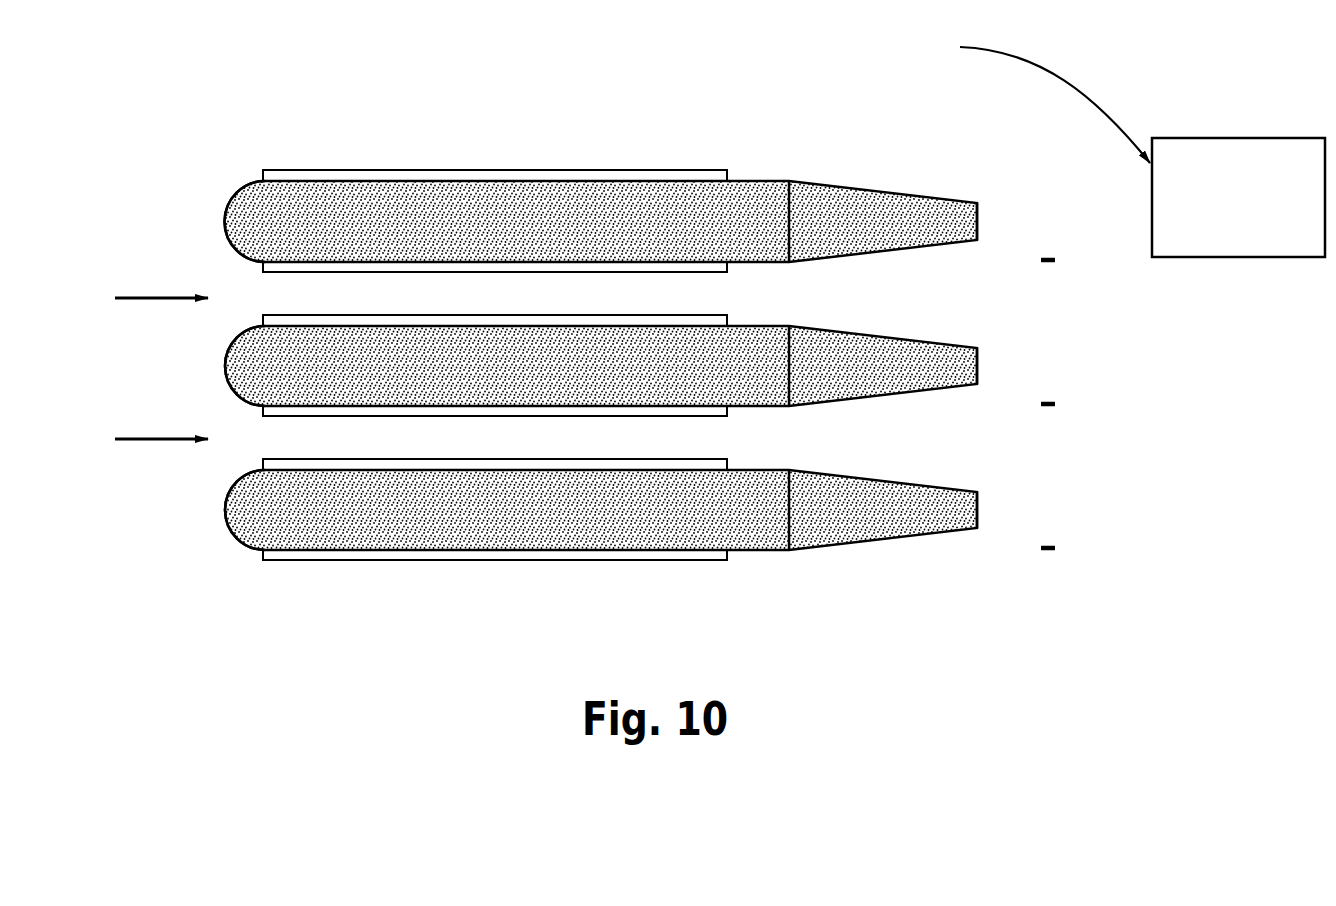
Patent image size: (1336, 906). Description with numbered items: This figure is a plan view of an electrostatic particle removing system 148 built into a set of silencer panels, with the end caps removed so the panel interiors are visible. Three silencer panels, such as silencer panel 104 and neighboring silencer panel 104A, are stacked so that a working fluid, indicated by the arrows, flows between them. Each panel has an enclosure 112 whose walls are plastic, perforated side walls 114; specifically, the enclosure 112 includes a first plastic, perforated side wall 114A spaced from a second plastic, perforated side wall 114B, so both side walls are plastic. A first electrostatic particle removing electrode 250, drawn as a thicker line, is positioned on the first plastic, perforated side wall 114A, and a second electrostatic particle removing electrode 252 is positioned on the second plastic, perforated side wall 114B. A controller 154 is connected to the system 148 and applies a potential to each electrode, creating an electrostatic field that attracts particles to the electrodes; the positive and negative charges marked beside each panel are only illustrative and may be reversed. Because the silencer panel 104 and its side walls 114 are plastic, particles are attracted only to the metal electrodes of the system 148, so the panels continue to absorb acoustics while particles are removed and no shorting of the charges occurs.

The silencer panel 104 is at (228, 183).
The silencer panel 104A is at (222, 372).
The enclosure 112 is at (788, 553).
The side wall 114 is at (601, 341).
The first plastic, perforated side wall 114A is at (778, 181).
The second plastic, perforated side wall 114B is at (773, 263).
The electrostatic particle removing system 148 is at (703, 164).
The controller 154 is at (1216, 230).
The first electrostatic particle removing electrode 250 is at (283, 455).
The second electrostatic particle removing electrode 252 is at (583, 258).